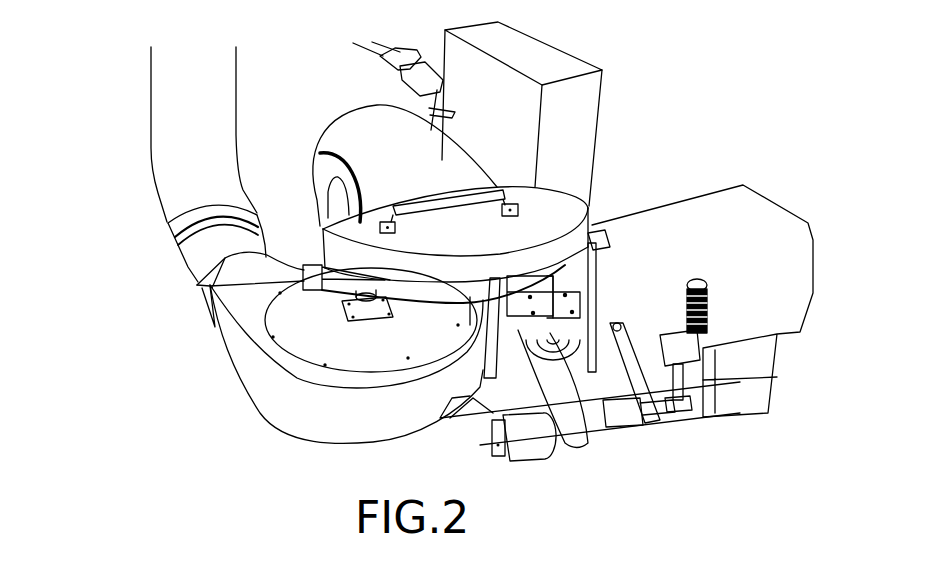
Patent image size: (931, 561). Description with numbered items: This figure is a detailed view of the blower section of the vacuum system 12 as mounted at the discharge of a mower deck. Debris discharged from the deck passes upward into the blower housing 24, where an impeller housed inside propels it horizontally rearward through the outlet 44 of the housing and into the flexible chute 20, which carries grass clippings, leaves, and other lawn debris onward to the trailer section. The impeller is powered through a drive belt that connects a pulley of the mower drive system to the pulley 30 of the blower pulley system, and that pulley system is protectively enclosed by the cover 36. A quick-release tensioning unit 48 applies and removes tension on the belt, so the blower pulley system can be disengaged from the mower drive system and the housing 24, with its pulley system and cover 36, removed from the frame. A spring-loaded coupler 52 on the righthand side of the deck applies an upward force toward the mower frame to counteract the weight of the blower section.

The vacuum system 12 is at (721, 207).
The flexible chute 20 is at (178, 175).
The blower housing 24 is at (290, 408).
The pulley 30 is at (562, 350).
The cover 36 is at (572, 202).
The outlet 44 is at (212, 287).
The quick-release tensioning unit 48 is at (623, 337).
The spring-loaded coupler 52 is at (707, 280).